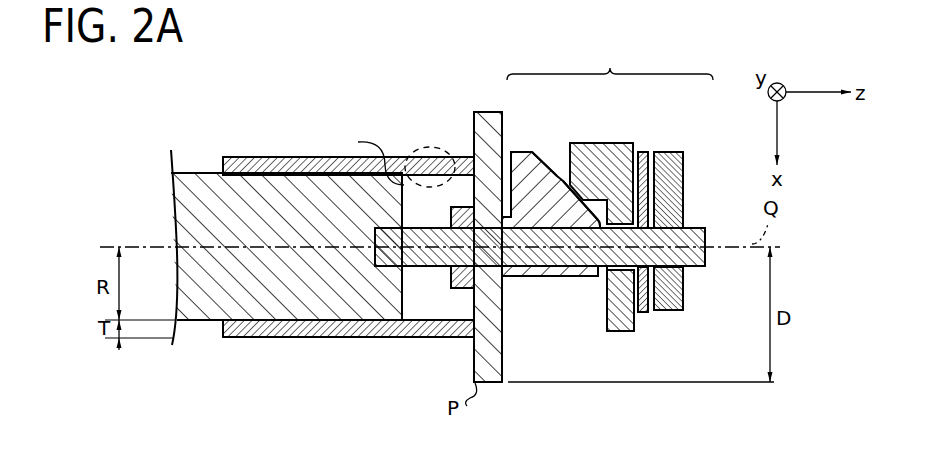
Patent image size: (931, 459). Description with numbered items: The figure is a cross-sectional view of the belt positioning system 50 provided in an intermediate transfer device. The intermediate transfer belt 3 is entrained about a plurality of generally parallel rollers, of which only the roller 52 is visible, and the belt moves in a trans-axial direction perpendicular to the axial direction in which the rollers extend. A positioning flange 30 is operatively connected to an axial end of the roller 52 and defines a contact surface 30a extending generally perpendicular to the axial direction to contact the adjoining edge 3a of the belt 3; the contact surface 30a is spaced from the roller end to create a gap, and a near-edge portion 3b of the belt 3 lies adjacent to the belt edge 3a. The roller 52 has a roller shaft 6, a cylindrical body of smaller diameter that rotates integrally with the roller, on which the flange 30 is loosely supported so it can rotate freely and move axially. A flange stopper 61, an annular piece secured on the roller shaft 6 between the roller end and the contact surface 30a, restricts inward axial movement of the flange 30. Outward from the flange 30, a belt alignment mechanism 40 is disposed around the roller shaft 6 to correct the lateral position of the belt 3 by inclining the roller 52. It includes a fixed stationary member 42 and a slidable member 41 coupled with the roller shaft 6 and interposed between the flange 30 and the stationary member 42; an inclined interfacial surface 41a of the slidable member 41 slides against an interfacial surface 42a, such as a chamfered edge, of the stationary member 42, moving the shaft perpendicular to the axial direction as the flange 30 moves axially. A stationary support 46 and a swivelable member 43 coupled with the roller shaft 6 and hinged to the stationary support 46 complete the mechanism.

The intermediate transfer belt 3 is at (281, 157).
The belt edge 3a is at (471, 150).
The near-edge portion 3b is at (413, 148).
The roller shaft 6 is at (705, 236).
The positioning flange 30 is at (502, 355).
The contact surface 30a is at (474, 120).
The belt alignment mechanism 40 is at (607, 186).
The slidable member 41 is at (521, 152).
The inclined interfacial surface 41a is at (547, 168).
The stationary member 42 is at (610, 143).
The interfacial surface 42a is at (568, 190).
The swivelable member 43 is at (672, 152).
The stationary support 46 is at (643, 152).
The belt positioning system 50 is at (394, 62).
The roller 52 is at (282, 297).
The flange stopper 61 is at (454, 272).